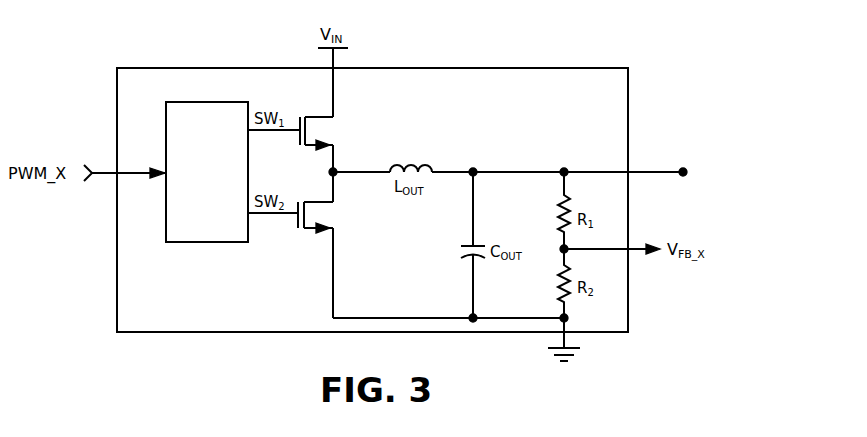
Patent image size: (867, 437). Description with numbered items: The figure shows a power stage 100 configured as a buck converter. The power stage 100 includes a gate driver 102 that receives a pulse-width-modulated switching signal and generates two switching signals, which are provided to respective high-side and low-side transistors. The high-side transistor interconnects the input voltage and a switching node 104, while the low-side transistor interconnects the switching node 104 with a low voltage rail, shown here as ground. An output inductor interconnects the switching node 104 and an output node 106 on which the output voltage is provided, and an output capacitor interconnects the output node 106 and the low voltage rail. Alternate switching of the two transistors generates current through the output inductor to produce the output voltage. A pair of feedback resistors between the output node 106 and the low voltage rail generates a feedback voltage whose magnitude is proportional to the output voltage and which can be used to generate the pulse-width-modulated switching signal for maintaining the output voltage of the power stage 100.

The power stage 100 is at (593, 68).
The gate driver 102 is at (218, 242).
The switching node 104 is at (342, 160).
The output node 106 is at (620, 160).